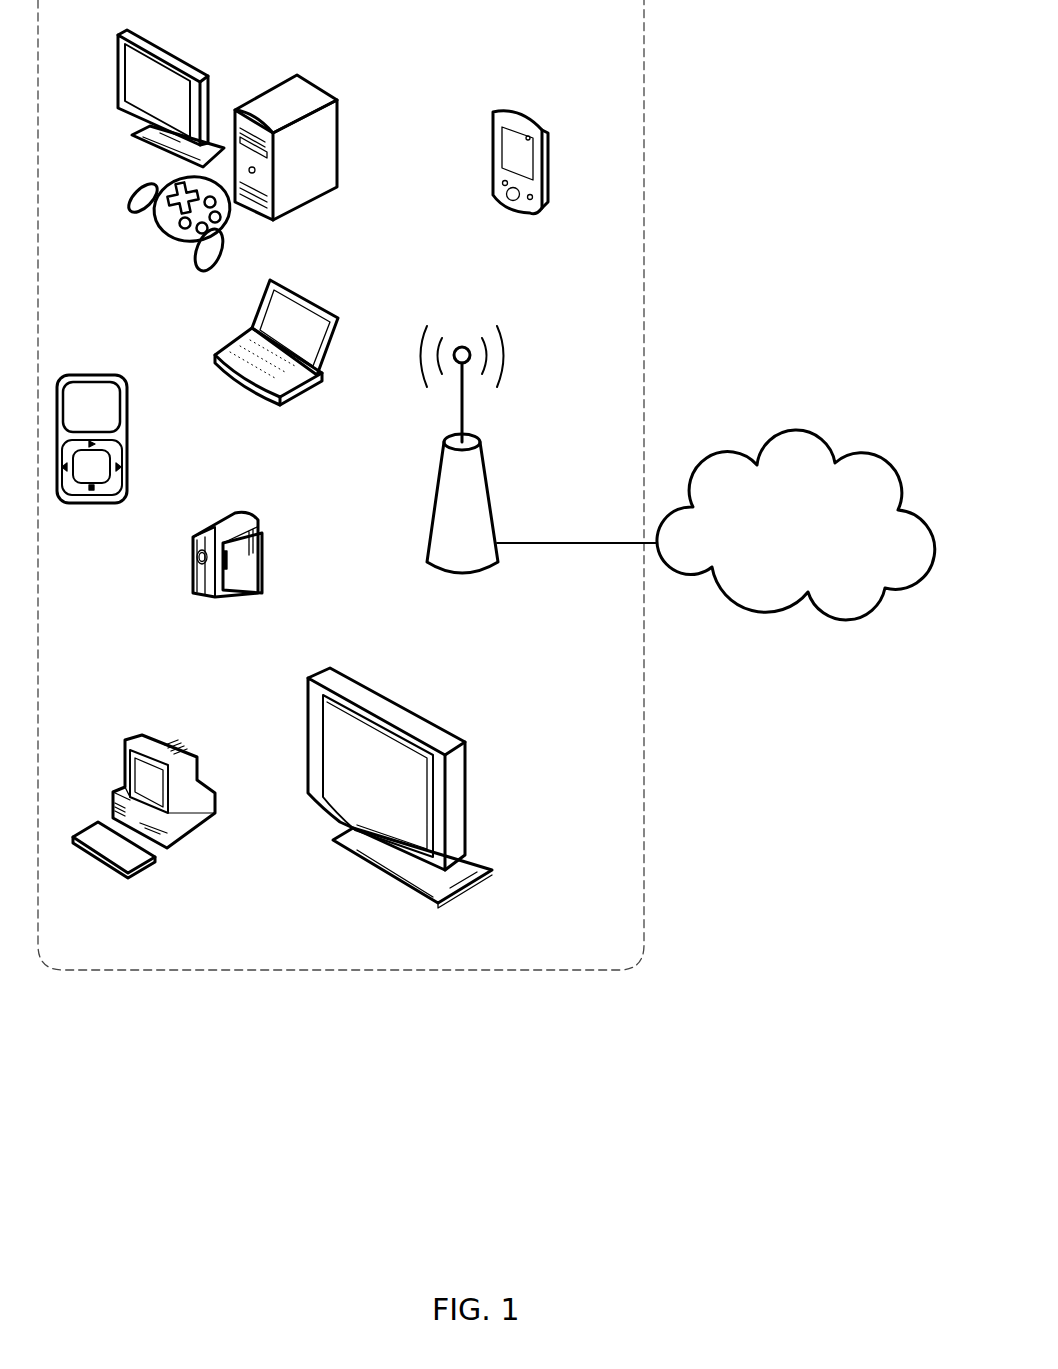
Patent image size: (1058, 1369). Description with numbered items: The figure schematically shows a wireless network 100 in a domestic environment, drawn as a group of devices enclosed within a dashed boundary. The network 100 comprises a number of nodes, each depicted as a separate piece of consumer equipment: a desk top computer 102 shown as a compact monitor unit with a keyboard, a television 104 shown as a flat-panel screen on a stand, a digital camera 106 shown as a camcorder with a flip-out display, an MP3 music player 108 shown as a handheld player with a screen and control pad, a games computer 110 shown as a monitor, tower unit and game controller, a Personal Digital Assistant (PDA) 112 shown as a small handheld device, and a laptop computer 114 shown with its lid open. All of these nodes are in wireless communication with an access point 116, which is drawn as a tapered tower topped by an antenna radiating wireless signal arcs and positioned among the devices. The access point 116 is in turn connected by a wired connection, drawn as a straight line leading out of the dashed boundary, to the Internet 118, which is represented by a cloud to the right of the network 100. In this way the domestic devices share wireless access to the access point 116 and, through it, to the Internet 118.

The wireless network 100 is at (147, 970).
The desk top computer 102 is at (140, 733).
The television 104 is at (330, 667).
The digital camera 106 is at (242, 513).
The MP3 music player 108 is at (102, 373).
The games computer 110 is at (232, 51).
The Personal Digital Assistant (PDA) 112 is at (520, 112).
The laptop computer 114 is at (302, 290).
The access point 116 is at (479, 550).
The Internet 118 is at (810, 543).